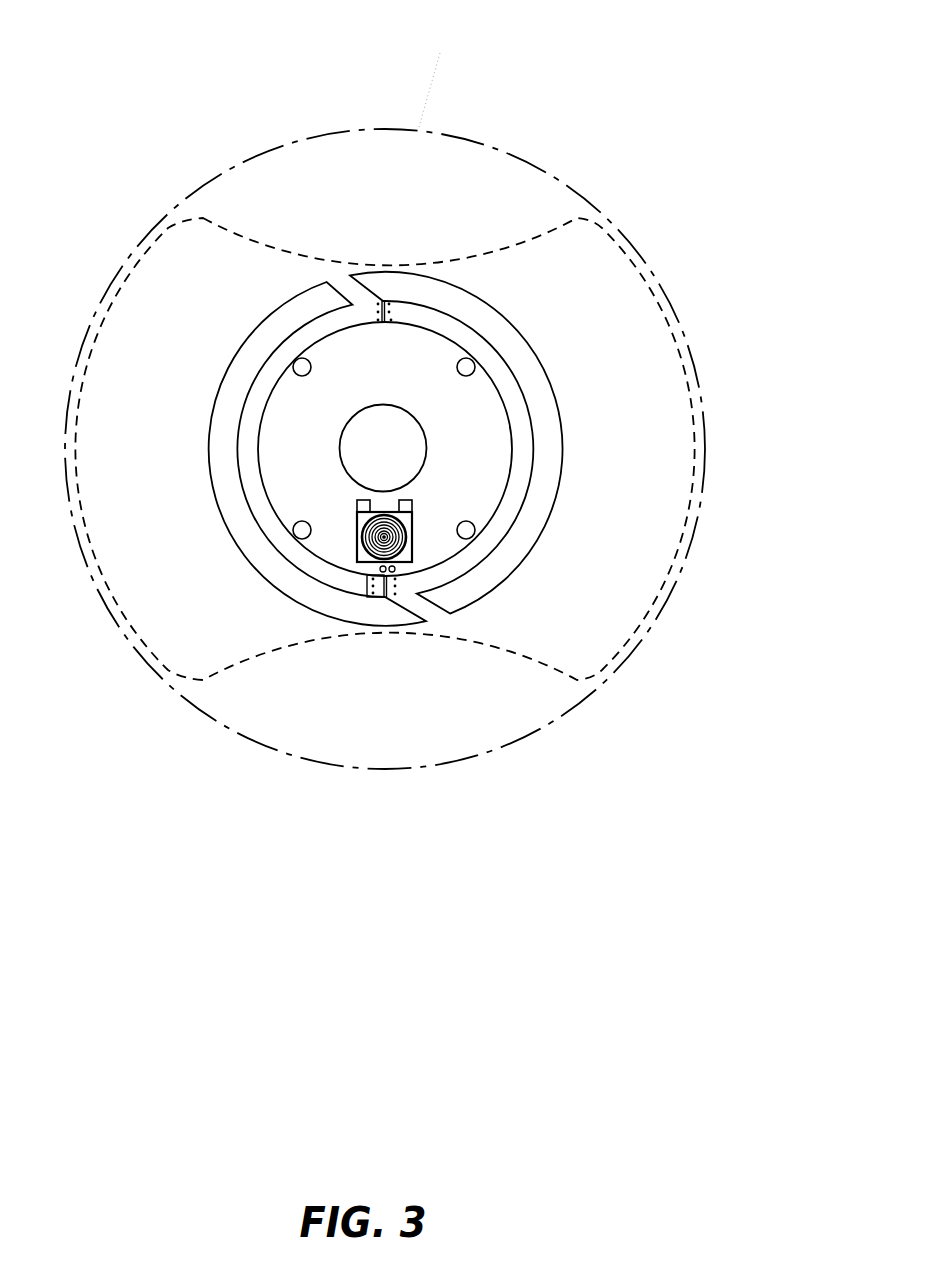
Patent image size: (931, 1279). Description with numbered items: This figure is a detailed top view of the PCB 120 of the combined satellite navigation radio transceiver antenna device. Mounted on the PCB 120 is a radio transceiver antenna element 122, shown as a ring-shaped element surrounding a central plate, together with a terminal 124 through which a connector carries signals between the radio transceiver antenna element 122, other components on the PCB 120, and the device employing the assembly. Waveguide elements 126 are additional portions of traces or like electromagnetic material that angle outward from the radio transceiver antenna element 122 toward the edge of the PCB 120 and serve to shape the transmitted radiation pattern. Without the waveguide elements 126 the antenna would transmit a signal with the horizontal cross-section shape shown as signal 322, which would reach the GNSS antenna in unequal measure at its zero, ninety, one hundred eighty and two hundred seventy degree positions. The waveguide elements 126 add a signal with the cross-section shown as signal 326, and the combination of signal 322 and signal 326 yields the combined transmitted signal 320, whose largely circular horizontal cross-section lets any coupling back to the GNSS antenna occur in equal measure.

The PCB 120 is at (552, 397).
The radio transceiver antenna element 122 is at (520, 500).
The terminal 124 is at (365, 560).
The waveguide elements 126 is at (343, 285).
The combined transmitted signal 320 is at (217, 173).
The signal 322 is at (575, 220).
The signal 326 is at (438, 69).